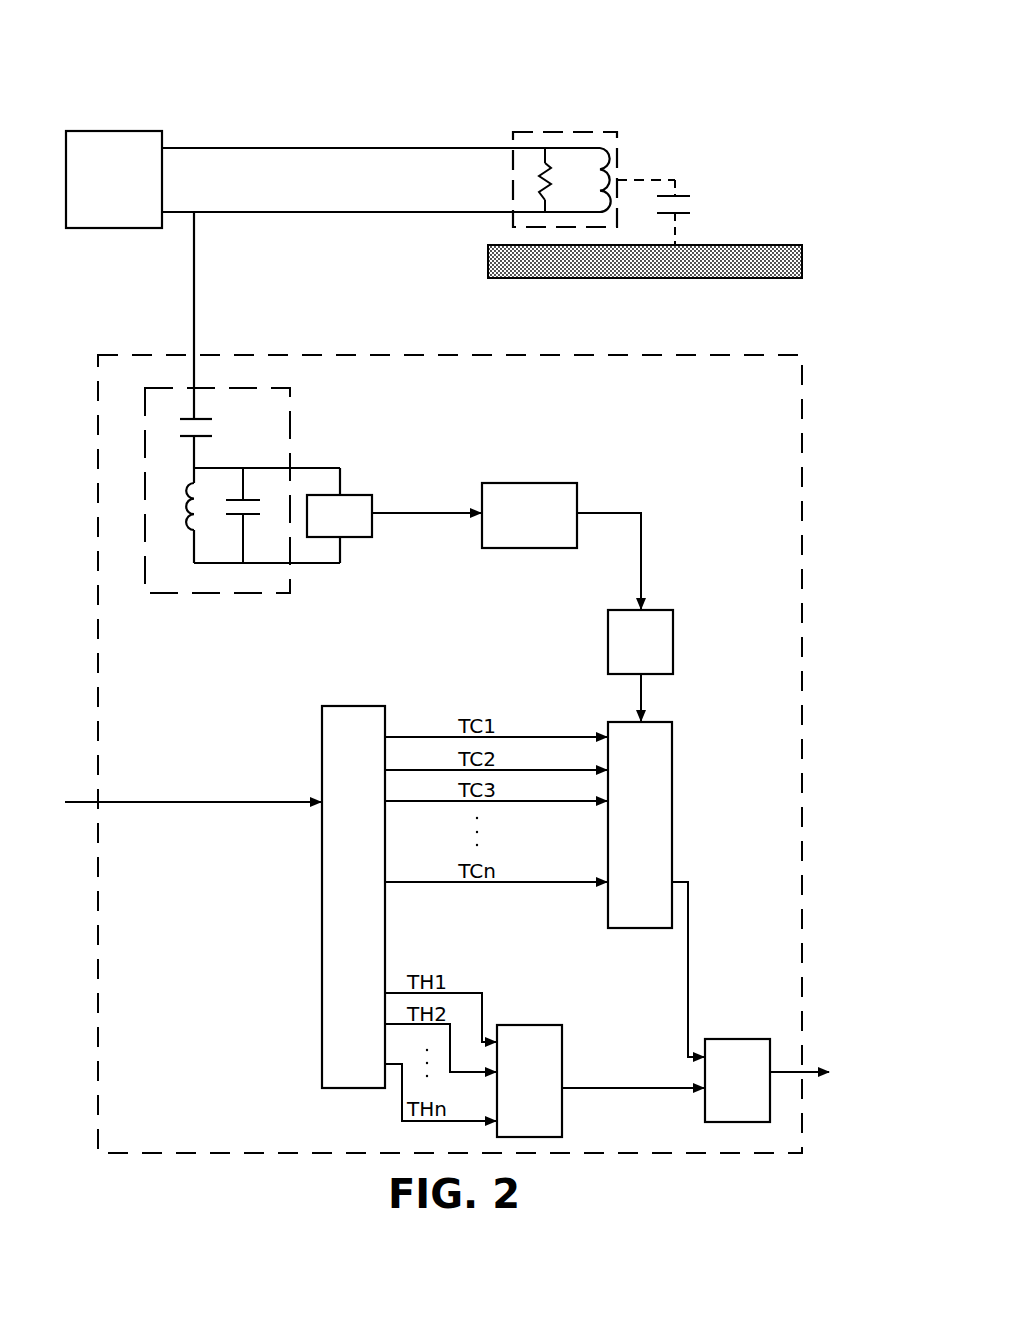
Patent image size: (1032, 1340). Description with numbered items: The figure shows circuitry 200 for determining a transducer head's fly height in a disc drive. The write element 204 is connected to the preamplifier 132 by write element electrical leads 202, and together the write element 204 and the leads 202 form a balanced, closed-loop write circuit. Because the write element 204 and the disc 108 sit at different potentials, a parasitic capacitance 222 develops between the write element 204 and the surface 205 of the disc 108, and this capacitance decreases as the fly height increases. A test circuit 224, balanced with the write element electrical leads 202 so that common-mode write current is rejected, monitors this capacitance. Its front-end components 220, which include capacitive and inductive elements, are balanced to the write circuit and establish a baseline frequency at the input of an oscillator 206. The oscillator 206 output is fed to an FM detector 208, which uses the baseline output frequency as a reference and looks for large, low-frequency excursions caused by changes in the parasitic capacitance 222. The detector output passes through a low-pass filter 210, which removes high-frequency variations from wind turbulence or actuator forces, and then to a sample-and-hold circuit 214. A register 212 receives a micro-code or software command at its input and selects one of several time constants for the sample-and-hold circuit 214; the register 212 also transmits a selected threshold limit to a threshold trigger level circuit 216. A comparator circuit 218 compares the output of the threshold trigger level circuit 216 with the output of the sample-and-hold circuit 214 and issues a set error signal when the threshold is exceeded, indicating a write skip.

The sensing system 200 is at (712, 66).
The preamplifier 132 is at (97, 174).
The write element electrical leads 202 is at (420, 142).
The write element 204 is at (630, 165).
The surface of the disc 205 is at (787, 244).
The parasitic capacitance 222 is at (712, 199).
The disc 108 is at (670, 279).
The test circuit 224 is at (88, 420).
The front-end components 220 is at (300, 435).
The oscillator 206 is at (356, 523).
The FM detector 208 is at (513, 523).
The low-pass filter 210 is at (623, 652).
The register 212 is at (336, 748).
The sample-and-hold circuit 214 is at (623, 763).
The threshold trigger level circuit 216 is at (513, 1058).
The comparator circuit 218 is at (721, 1080).